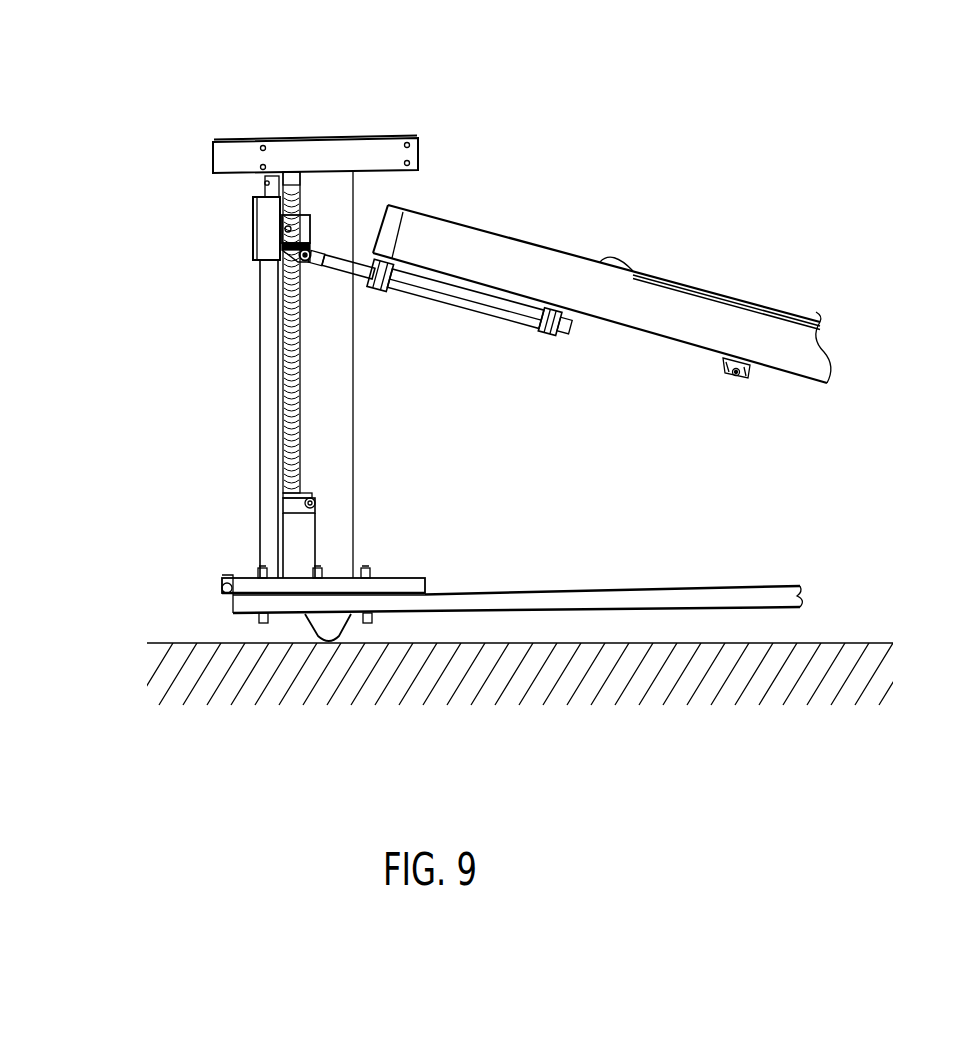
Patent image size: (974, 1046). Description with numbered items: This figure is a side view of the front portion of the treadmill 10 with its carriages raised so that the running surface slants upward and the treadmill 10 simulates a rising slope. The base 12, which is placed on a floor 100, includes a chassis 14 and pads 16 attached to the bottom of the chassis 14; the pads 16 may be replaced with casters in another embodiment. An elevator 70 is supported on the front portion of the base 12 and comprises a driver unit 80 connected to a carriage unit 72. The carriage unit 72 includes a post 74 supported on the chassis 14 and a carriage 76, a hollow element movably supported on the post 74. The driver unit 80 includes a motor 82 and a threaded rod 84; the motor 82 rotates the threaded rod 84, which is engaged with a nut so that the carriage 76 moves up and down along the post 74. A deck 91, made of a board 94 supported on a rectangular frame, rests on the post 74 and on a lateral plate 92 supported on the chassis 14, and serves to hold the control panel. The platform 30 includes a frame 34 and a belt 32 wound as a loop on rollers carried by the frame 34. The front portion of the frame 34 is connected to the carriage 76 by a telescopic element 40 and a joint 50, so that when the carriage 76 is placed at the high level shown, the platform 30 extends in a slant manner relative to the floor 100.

The treadmill 10 is at (836, 452).
The base 12 is at (674, 575).
The chassis 14 is at (533, 600).
The pad 16 is at (345, 643).
The platform 30 is at (671, 256).
The belt 32 is at (712, 292).
The frame 34 is at (653, 324).
The telescopic element 40 is at (449, 306).
The joint 50 is at (311, 266).
The elevator 70 is at (266, 131).
The carriage unit 72 is at (193, 215).
The post 74 is at (262, 292).
The carriage 76 is at (265, 229).
The driver unit 80 is at (208, 438).
The motor 82 is at (290, 537).
The threaded rod 84 is at (288, 455).
The deck 91 is at (423, 129).
The lateral plate 92 is at (345, 456).
The board 94 is at (425, 150).
The floor 100 is at (782, 643).